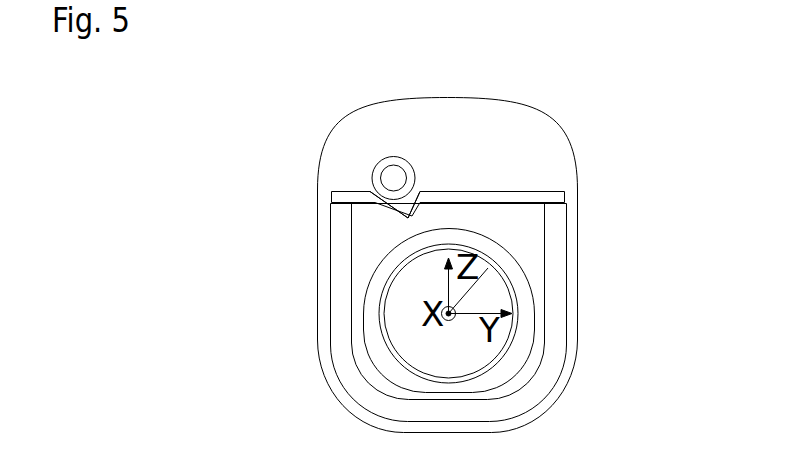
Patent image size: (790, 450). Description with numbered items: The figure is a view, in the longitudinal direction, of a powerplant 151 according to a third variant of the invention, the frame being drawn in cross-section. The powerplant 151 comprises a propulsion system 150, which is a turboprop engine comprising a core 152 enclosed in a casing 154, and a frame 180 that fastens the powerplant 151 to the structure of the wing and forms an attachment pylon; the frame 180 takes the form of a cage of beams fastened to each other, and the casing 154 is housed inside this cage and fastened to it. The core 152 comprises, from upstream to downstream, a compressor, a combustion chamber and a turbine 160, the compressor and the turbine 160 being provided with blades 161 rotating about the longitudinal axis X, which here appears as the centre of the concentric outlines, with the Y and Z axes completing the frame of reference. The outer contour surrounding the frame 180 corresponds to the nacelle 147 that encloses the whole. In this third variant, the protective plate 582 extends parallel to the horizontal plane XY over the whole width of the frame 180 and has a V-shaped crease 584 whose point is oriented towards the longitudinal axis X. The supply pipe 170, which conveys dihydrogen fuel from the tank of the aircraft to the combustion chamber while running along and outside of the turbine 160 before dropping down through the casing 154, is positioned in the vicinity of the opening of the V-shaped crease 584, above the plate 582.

The housing 147 is at (557, 130).
The propulsion system 150 is at (213, 275).
The powerplant 151 is at (187, 162).
The core 152 is at (213, 332).
The casing 154 is at (520, 333).
The turbine 160 is at (523, 248).
The blades 161 is at (488, 286).
The supply pipe 170 is at (388, 158).
The frame 180 is at (540, 377).
The protective plate 582 is at (340, 197).
The V-shaped crease 584 is at (408, 215).